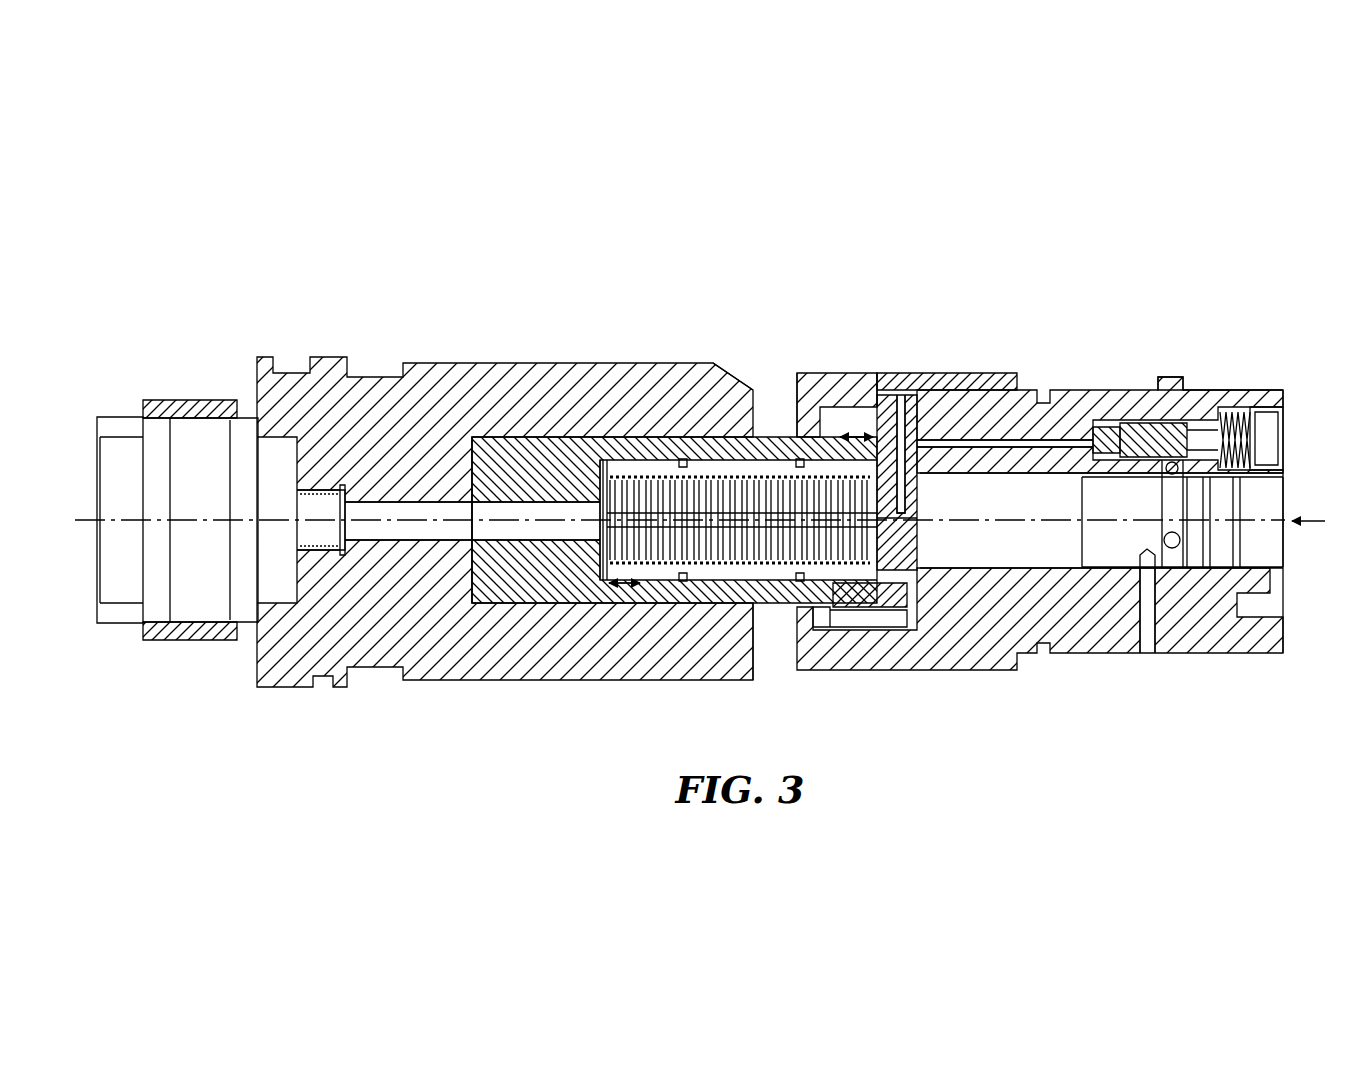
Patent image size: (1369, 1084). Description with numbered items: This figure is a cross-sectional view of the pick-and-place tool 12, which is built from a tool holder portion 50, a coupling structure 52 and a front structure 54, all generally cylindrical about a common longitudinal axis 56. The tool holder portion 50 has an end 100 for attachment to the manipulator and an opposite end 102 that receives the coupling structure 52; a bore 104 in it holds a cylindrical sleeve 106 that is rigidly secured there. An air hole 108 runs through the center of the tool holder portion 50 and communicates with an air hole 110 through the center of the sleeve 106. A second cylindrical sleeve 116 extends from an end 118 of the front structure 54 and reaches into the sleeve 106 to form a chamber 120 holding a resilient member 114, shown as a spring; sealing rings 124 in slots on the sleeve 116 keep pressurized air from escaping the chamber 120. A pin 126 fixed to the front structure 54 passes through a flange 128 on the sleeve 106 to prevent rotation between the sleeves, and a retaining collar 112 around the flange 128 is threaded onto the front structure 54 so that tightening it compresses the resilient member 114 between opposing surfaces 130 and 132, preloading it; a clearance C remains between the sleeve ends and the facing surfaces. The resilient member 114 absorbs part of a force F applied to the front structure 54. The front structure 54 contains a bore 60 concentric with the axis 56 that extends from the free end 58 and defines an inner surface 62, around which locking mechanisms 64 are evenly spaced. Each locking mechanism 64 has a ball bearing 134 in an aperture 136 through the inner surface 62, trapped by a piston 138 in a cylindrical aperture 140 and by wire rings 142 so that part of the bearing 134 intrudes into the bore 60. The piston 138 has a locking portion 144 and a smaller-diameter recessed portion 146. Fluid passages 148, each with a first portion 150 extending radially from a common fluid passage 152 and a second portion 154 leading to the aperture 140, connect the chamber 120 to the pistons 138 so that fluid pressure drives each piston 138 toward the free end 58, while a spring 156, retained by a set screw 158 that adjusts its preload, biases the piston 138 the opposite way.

The pick-and-place tool 12 is at (854, 226).
The tool holder portion 50 is at (382, 310).
The coupling structure 52 is at (855, 312).
The front structure 54 is at (1142, 310).
The longitudinal axis 56 is at (95, 523).
The free end 58 is at (1285, 635).
The bore 60 is at (1103, 545).
The inner surface 62 is at (1272, 497).
The locking mechanisms 64 is at (1215, 393).
The end 100 is at (148, 400).
The opposite end 102 is at (713, 365).
The bore 104 is at (510, 437).
The cylindrical sleeve 106 is at (535, 448).
The air hole 108 is at (412, 508).
The air hole 110 is at (498, 530).
The retaining collar 112 is at (876, 380).
The resilient member 114 is at (625, 580).
The cylindrical sleeve 116 is at (735, 600).
The end 118 is at (860, 628).
The chamber 120 is at (690, 530).
The sealing rings 124 is at (683, 460).
The pin 126 is at (882, 600).
The flange 128 is at (800, 380).
The surface 130 is at (612, 465).
The surface 132 is at (887, 560).
The bearing 134 is at (1163, 482).
The aperture 136 is at (1184, 482).
The piston 138 is at (1112, 430).
The cylindrical aperture 140 is at (1163, 437).
The wire rings 142 is at (1155, 572).
The locking portion 144 is at (1180, 415).
The recessed portion 146 is at (1176, 425).
The fluid passages 148 is at (930, 437).
The first portion 150 is at (902, 480).
The common fluid passage 152 is at (905, 520).
The second portion 154 is at (980, 440).
The spring 156 is at (1258, 425).
The set screw 158 is at (1267, 440).
The clearance C is at (845, 430).
The force F is at (1322, 522).